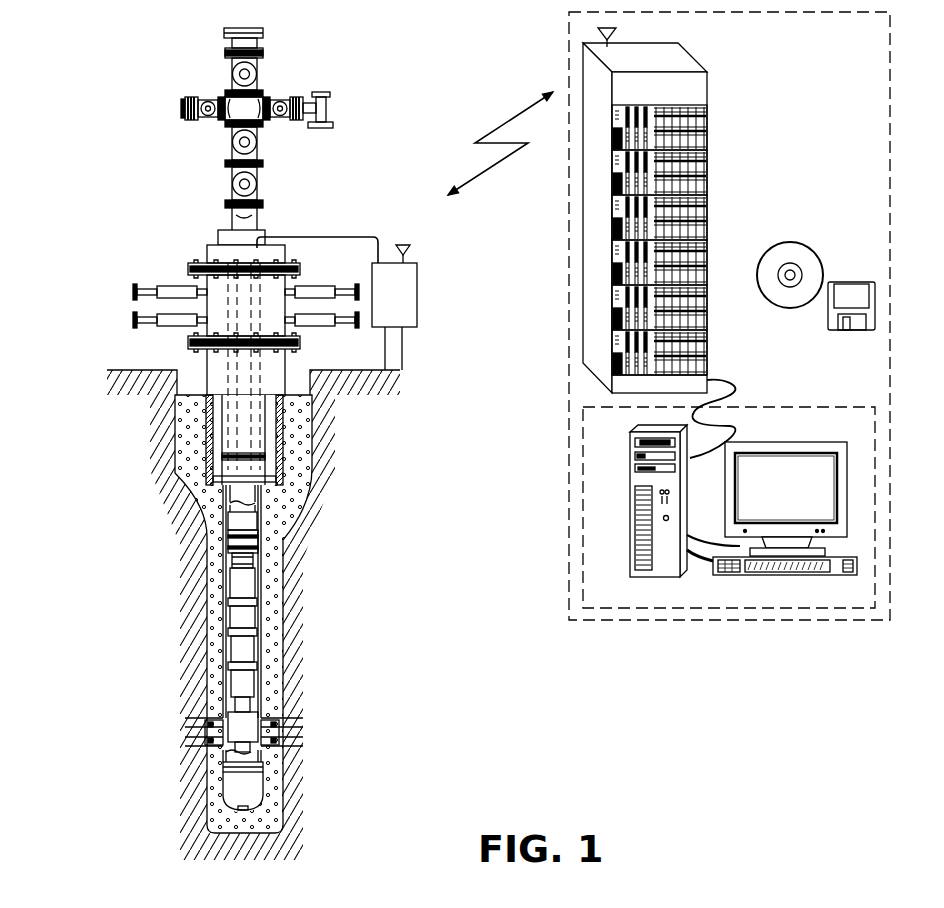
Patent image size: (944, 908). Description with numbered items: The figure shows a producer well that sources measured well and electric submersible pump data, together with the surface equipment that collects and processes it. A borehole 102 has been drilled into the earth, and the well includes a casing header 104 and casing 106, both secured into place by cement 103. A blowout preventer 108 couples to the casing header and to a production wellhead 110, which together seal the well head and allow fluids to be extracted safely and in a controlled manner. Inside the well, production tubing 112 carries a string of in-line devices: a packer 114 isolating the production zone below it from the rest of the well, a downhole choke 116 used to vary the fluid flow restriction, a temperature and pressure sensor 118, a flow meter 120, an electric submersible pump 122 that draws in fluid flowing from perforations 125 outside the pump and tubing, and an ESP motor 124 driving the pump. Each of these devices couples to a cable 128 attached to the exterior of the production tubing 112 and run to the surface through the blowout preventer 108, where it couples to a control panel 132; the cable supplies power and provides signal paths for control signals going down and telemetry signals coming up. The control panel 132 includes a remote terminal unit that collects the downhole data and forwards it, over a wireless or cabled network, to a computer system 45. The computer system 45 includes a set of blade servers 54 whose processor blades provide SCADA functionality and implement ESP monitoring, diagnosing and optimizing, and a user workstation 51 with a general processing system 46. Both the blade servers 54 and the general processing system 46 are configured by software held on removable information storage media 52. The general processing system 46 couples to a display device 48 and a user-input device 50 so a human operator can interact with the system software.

The computer system 45 is at (876, 52).
The general processing system 46 is at (687, 514).
The display device 48 is at (835, 538).
The user-input device 50 is at (838, 576).
The user workstation 51 is at (621, 445).
The information storage media 52 is at (840, 282).
The blade servers 54 is at (678, 62).
The borehole 102 is at (175, 403).
The cement 103 is at (200, 497).
The casing header 104 is at (207, 428).
The casing 106 is at (225, 613).
The blowout preventer 108 is at (203, 287).
The production wellhead 110 is at (222, 120).
The production tubing 112 is at (233, 520).
The packer 114 is at (233, 547).
The downhole choke 116 is at (238, 582).
The temperature and pressure sensor 118 is at (232, 633).
The flow meter 120 is at (233, 657).
The electric submersible pump 122 is at (232, 678).
The ESP motor 124 is at (245, 732).
The perforations 125 is at (168, 718).
The cable 128 is at (341, 236).
The control panel 132 is at (402, 313).